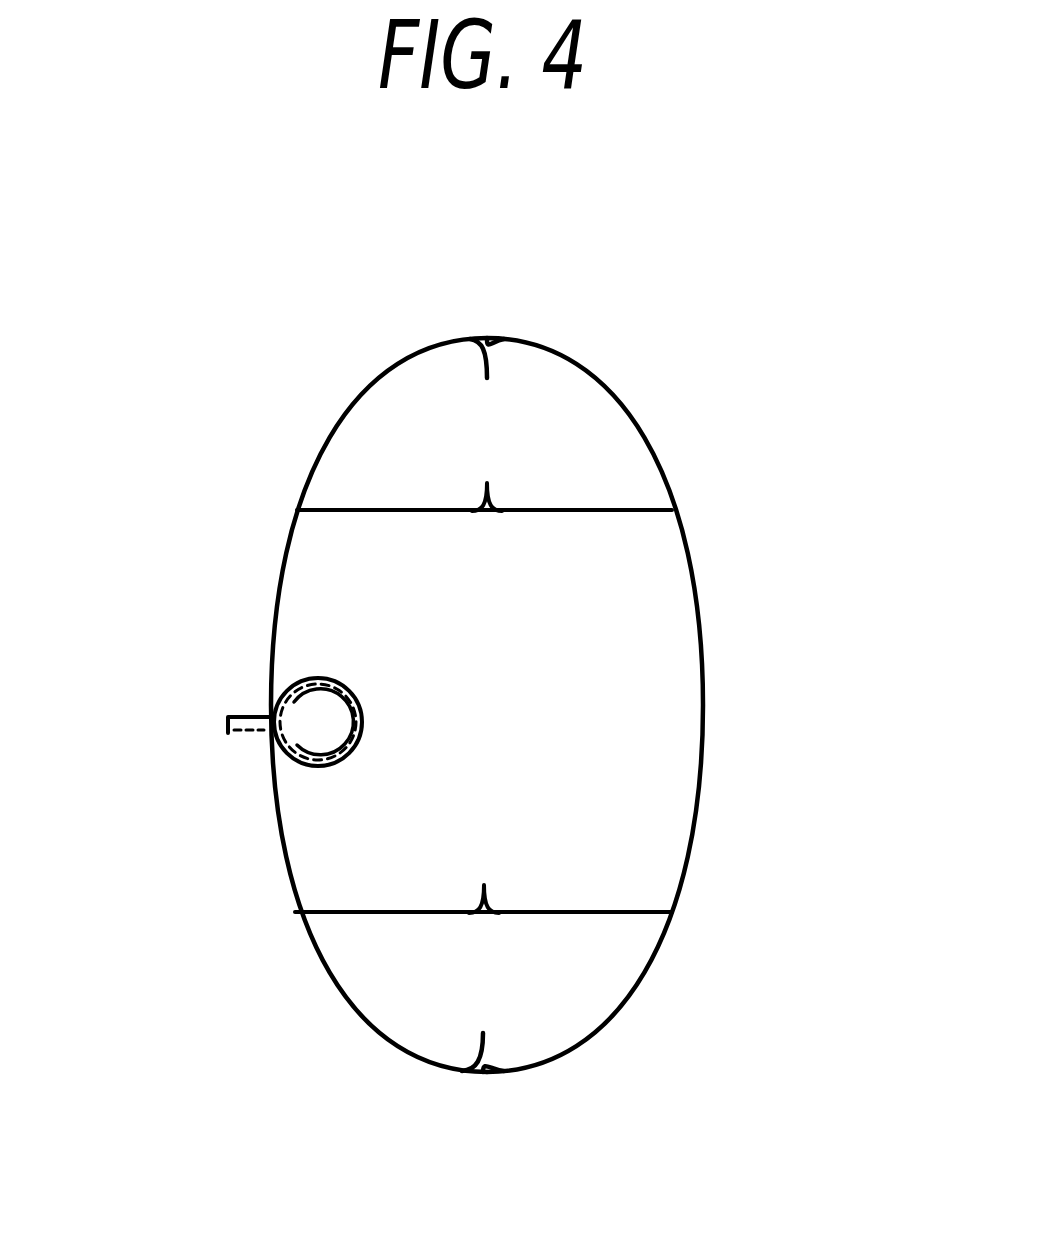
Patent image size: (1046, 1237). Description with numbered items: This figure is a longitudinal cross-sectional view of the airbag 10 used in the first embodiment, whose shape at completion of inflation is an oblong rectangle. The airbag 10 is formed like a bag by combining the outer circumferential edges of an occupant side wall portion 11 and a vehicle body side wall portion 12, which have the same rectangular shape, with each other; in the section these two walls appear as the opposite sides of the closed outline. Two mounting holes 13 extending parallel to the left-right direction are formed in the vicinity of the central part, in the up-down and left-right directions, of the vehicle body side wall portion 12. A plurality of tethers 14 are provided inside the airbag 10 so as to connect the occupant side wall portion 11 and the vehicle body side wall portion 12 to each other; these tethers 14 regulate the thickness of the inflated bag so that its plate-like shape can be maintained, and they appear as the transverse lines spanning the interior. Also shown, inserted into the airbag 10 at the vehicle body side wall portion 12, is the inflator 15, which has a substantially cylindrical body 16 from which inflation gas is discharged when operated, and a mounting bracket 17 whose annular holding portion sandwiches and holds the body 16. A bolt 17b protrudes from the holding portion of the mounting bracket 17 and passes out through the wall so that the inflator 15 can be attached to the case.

The airbag 10 is at (706, 365).
The occupant side wall portion 11 is at (703, 697).
The vehicle body side wall portion 12 is at (280, 577).
The mounting hole 13 is at (240, 754).
The tether 14 is at (553, 537).
The inflator 15 is at (210, 839).
The body 16 is at (306, 736).
The mounting bracket 17 is at (333, 767).
The bolt 17b is at (226, 692).